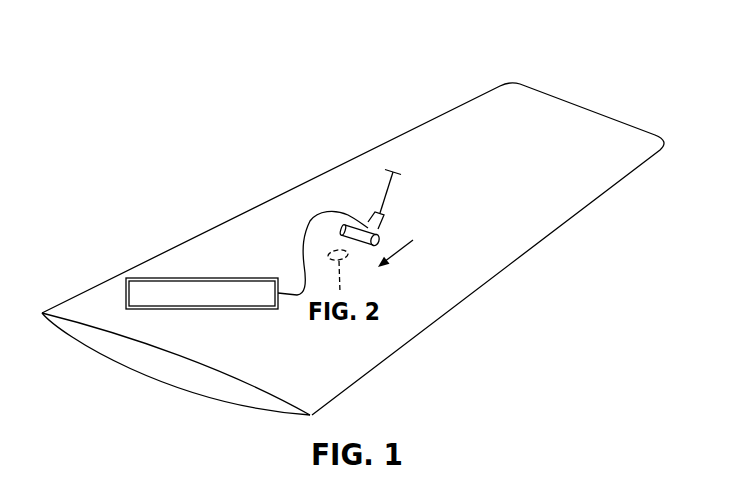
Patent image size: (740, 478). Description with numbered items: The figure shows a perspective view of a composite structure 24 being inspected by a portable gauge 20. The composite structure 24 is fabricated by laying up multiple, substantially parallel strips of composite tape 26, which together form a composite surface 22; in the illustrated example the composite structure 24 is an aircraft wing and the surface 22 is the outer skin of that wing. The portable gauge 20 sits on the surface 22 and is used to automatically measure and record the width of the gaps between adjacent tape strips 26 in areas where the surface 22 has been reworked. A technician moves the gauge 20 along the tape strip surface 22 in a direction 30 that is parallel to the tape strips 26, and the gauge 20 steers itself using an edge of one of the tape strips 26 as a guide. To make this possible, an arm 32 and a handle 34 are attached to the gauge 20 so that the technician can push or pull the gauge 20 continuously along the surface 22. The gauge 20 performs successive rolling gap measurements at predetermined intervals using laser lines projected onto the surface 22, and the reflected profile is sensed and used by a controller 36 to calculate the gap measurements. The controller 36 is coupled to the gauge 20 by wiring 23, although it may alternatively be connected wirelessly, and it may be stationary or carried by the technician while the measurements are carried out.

The portable gauge 20 is at (369, 219).
The composite surface 22 is at (481, 119).
The wiring 23 is at (312, 218).
The composite structure 24 is at (397, 68).
The composite tape strips 26 is at (617, 475).
The direction 30 is at (397, 252).
The arm 32 is at (374, 211).
The handle 34 is at (401, 174).
The controller 36 is at (203, 278).